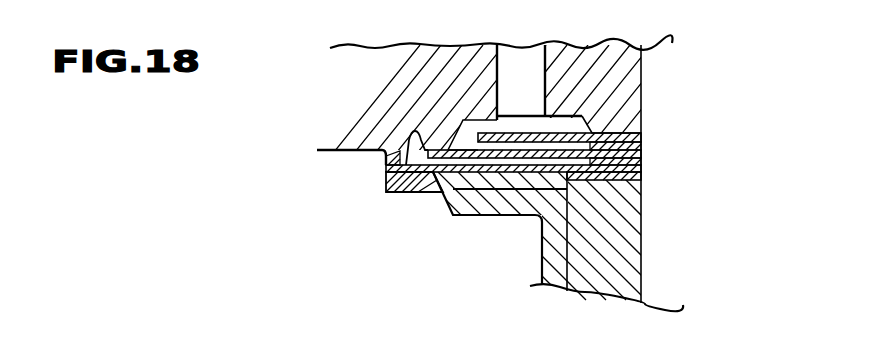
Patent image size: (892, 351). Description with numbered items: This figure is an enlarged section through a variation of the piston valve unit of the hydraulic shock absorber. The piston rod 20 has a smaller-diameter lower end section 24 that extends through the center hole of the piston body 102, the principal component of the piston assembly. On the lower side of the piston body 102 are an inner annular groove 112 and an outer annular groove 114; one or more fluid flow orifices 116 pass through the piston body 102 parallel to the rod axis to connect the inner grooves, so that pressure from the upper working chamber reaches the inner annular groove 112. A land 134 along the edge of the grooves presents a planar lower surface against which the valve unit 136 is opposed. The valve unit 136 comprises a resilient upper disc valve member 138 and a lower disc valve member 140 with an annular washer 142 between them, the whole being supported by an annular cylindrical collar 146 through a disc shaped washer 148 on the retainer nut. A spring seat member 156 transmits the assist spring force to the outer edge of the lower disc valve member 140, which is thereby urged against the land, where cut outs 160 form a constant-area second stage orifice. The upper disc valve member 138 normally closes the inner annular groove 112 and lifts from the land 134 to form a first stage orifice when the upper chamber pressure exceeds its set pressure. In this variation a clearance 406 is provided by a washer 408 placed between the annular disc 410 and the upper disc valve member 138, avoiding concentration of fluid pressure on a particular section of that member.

The piston rod 20 is at (664, 34).
The lower end section 24 is at (672, 295).
The piston body 102 is at (580, 50).
The inner annular groove 112 is at (603, 95).
The outer annular groove 114 is at (315, 134).
The fluid flow orifice 116 is at (519, 70).
The land 134 is at (430, 182).
The valve unit 136 is at (386, 190).
The upper disc valve member 138 is at (625, 153).
The lower disc valve member 140 is at (632, 172).
The annular washer 142 is at (642, 162).
The annular cylindrical collar 146 is at (597, 283).
The disc shaped washer 148 is at (636, 182).
The spring seat member 156 is at (474, 216).
The cut out 160 is at (390, 158).
The clearance 406 is at (615, 131).
The washer 408 is at (453, 127).
The annular disc 410 is at (490, 125).